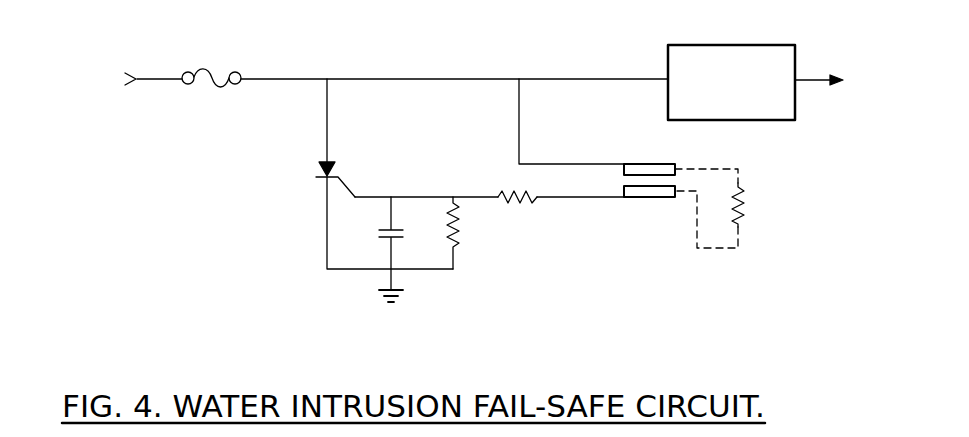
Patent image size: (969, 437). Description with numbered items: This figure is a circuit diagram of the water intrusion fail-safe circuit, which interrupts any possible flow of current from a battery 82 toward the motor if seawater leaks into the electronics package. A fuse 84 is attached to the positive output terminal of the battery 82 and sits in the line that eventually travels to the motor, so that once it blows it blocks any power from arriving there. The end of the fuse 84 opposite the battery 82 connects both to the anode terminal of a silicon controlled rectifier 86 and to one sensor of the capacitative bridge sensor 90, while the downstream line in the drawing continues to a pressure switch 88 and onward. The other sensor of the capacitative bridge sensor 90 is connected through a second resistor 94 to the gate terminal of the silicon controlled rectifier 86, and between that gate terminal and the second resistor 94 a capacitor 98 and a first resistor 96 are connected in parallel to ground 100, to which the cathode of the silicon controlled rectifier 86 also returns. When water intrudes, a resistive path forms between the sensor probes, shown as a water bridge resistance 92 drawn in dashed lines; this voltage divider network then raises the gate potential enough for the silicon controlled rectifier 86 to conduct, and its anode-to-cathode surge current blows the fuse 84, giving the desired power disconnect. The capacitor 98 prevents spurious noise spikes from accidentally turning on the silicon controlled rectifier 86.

The battery 82 is at (62, 68).
The fuse 84 is at (210, 37).
The silicon controlled rectifier 86 is at (268, 154).
The pressure switch 88 is at (728, 46).
The capacitative bridge sensor 90 is at (652, 164).
The water bridge resistance 92 is at (742, 192).
The resistor 94 is at (533, 200).
The resistor 96 is at (460, 246).
The capacitor 98 is at (352, 232).
The ground 100 is at (375, 296).